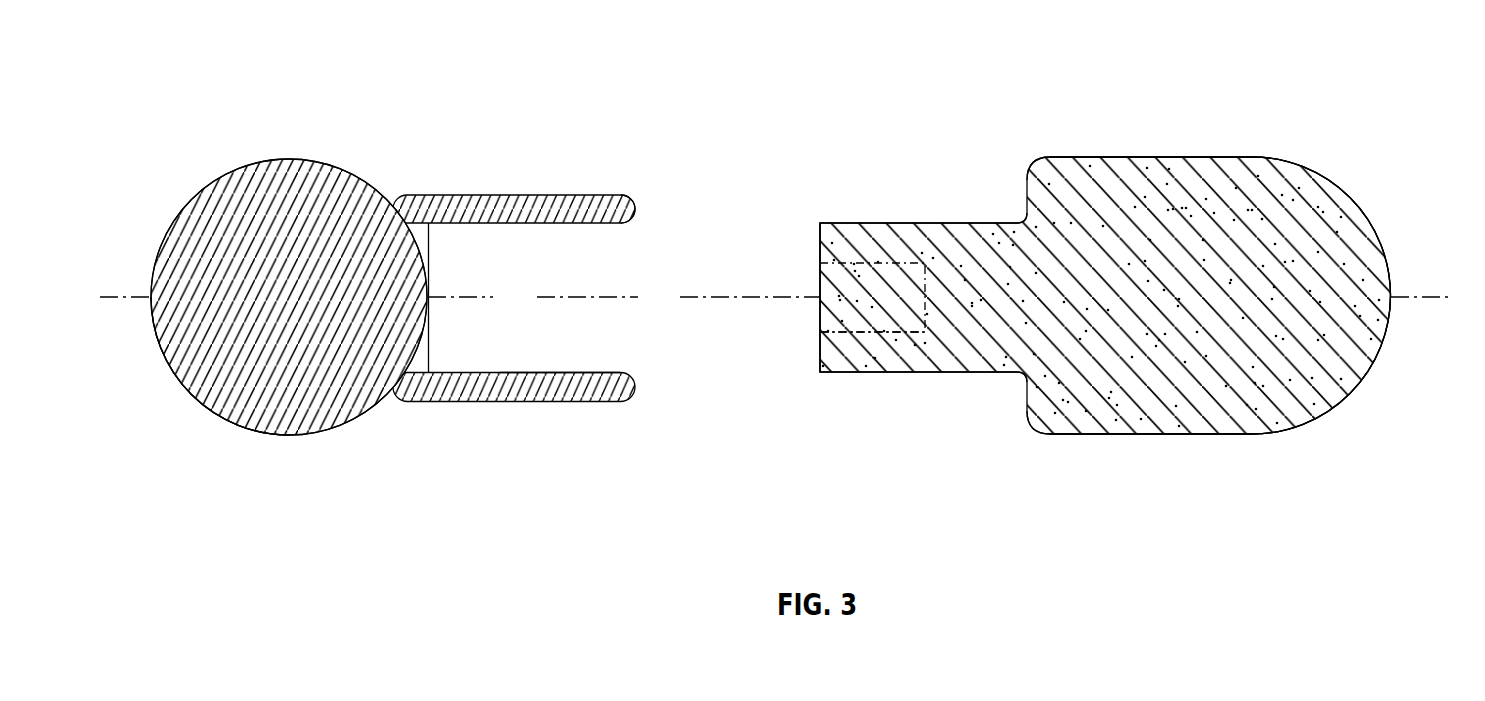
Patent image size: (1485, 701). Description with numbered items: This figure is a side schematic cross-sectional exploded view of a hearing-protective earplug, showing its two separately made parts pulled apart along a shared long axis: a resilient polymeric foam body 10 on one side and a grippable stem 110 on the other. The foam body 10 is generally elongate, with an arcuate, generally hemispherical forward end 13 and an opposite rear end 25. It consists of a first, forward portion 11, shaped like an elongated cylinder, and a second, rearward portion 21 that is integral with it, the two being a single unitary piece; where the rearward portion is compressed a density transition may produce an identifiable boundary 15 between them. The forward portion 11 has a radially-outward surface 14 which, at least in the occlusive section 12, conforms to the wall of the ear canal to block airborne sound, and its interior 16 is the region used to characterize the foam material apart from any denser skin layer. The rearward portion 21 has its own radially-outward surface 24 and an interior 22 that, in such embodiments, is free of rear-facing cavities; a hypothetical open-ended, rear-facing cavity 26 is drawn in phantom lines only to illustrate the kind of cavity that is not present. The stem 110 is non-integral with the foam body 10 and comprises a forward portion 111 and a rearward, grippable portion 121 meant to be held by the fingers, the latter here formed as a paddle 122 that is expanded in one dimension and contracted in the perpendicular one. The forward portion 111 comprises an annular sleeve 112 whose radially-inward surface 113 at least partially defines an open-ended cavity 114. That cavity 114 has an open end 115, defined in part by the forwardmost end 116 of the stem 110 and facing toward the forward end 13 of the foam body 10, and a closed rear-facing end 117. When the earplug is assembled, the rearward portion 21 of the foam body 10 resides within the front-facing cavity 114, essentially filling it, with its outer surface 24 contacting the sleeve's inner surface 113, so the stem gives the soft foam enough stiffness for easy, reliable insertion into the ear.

The resilient polymeric foam body 10 is at (1110, 250).
The first, forward portion 11 is at (1307, 183).
The occlusive section 12 is at (1177, 422).
The forward end 13 is at (1397, 272).
The radially-outward surface 14 is at (1155, 156).
The boundary 15 is at (1010, 282).
The interior 16 is at (1220, 311).
The second, rearward portion 21 is at (890, 238).
The interior 22 is at (889, 311).
The radially-outward surface 24 is at (968, 222).
The rear end 25 is at (820, 283).
The hypothetical open-ended, rear-facing cavity 26 is at (897, 333).
The grippable stem 110 is at (423, 234).
The forward portion 111 is at (487, 194).
The annular sleeve 112 is at (468, 403).
The radially-inward surface 113 is at (550, 372).
The open-ended cavity 114 is at (535, 311).
The open end 115 is at (636, 261).
The forwardmost end 116 is at (636, 208).
The closed rear-facing end 117 is at (429, 266).
The rearward, grippable portion 121 is at (208, 152).
The paddle 122 is at (205, 408).